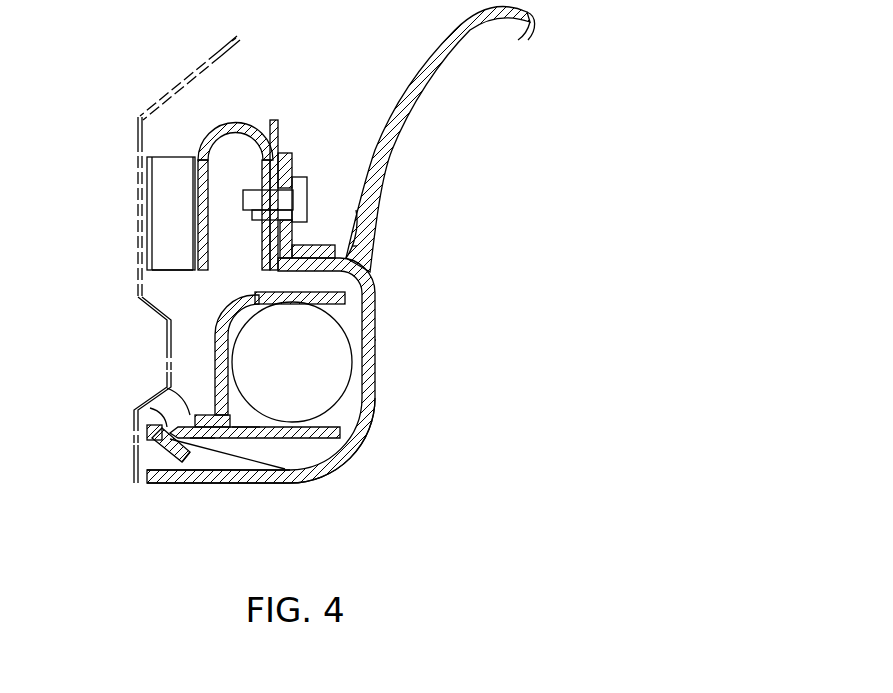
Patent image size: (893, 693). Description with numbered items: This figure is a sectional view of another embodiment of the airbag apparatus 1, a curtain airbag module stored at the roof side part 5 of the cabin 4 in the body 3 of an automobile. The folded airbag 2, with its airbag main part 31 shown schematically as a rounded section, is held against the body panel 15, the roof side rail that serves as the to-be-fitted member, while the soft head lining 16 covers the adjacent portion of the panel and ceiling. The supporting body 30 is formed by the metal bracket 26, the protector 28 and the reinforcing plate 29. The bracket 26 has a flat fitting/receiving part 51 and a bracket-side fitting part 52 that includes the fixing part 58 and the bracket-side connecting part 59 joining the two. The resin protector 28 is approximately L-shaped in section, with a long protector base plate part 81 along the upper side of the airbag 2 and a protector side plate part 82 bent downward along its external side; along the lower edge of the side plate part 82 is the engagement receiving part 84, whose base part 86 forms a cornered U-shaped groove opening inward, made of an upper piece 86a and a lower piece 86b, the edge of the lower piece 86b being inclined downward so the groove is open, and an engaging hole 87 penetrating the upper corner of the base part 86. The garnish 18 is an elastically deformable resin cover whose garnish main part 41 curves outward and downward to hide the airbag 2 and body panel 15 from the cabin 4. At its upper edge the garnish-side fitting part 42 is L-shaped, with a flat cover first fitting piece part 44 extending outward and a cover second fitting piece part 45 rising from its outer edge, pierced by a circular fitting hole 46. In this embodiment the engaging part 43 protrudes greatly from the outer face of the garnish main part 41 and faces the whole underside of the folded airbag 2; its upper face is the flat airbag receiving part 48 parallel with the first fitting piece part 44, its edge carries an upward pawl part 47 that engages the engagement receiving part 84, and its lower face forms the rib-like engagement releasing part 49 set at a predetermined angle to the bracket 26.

The airbag apparatus 1 is at (465, 343).
The airbag 2 is at (330, 380).
The body 3 is at (233, 40).
The cabin 4 is at (470, 259).
The roof side part 5 is at (340, 170).
The body panel 15 is at (228, 47).
The head lining 16 is at (438, 64).
The garnish 18 is at (327, 472).
The bracket 26 is at (165, 175).
The protector 28 is at (223, 320).
The reinforcing plate 29 is at (278, 128).
The supporting body 30 is at (168, 157).
The airbag main part 31 is at (322, 393).
The garnish main part 41 is at (296, 480).
The garnish-side fitting part 42 is at (292, 165).
The engaging part 43 is at (232, 440).
The cover first fitting piece part 44 is at (353, 250).
The cover second fitting piece part 45 is at (295, 237).
The fitting hole 46 is at (300, 200).
The pawl part 47 is at (165, 425).
The airbag receiving part 48 is at (253, 425).
The engagement releasing part 49 is at (197, 455).
The fitting/receiving part 51 is at (191, 160).
The bracket-side fitting part 52 is at (165, 247).
The fixing part 58 is at (148, 220).
The bracket-side connecting part 59 is at (165, 200).
The protector base plate part 81 is at (262, 291).
The protector side plate part 82 is at (220, 360).
The engagement receiving part 84 is at (150, 446).
The base part 86 is at (160, 450).
The upper piece 86a is at (190, 415).
The lower piece 86b is at (172, 462).
The engaging hole 87 is at (150, 407).